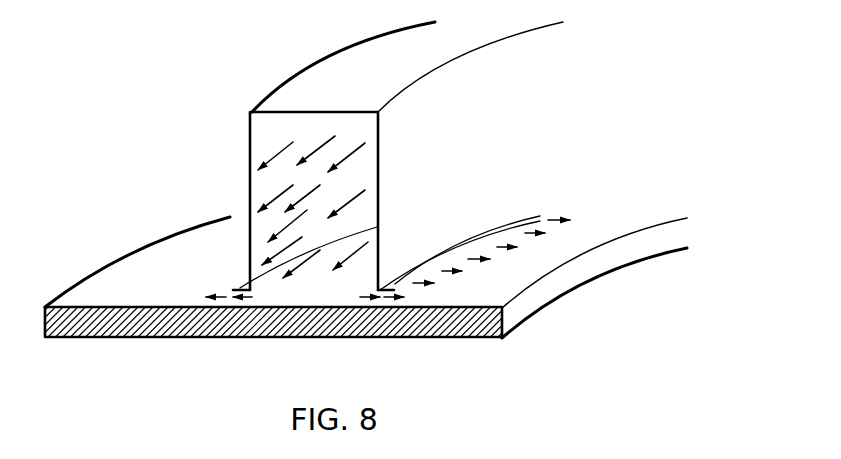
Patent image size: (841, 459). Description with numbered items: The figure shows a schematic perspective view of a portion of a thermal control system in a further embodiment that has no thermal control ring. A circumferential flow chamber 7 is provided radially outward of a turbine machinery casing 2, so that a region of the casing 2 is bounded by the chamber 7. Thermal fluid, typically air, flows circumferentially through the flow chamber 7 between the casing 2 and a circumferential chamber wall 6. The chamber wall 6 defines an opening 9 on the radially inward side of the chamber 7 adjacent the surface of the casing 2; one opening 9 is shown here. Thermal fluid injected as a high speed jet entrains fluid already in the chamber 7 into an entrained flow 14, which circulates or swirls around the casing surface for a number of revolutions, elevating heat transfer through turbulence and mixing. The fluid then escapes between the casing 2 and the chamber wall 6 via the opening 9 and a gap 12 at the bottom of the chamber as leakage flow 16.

The turbine machinery casing 2 is at (83, 295).
The circumferential chamber wall 6 is at (297, 97).
The circumferential flow chamber 7 is at (263, 138).
The entrained flow 14 is at (352, 148).
The gap 12 is at (243, 303).
The opening 9 is at (343, 285).
The leakage flow 16 is at (443, 273).